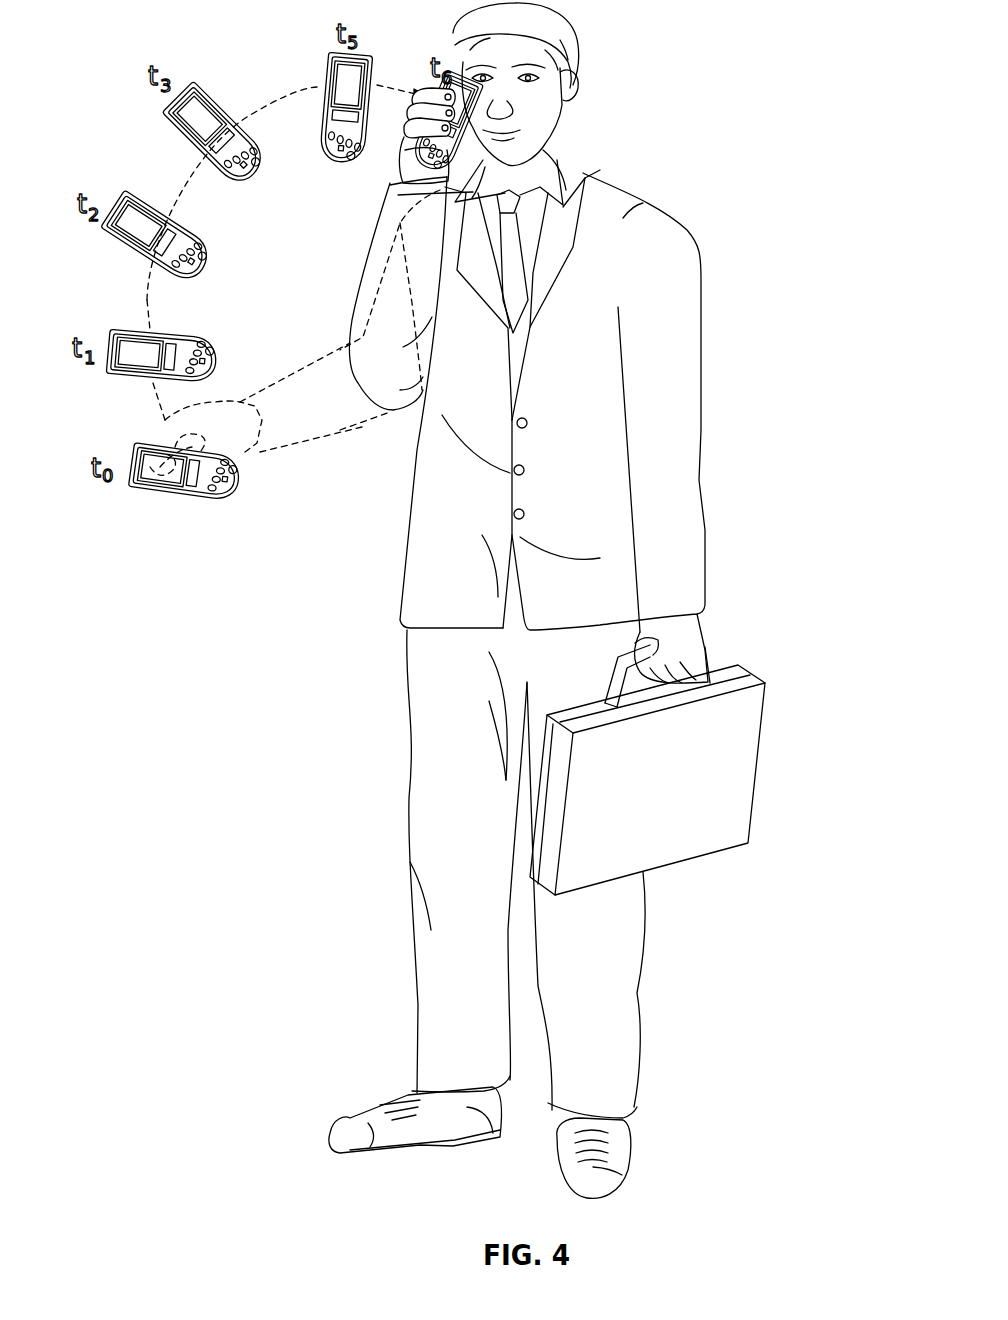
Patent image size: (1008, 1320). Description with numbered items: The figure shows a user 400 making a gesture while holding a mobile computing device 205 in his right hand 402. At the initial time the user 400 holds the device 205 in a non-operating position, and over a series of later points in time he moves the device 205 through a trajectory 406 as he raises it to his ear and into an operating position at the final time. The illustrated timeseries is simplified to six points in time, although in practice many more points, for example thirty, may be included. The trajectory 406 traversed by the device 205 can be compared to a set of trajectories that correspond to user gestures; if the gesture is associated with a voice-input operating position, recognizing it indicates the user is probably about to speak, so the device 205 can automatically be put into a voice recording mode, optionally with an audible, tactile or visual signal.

The user 400 is at (672, 213).
The right hand 402 is at (157, 432).
The trajectory 406 is at (287, 97).
The mobile computing device 205 is at (177, 498).